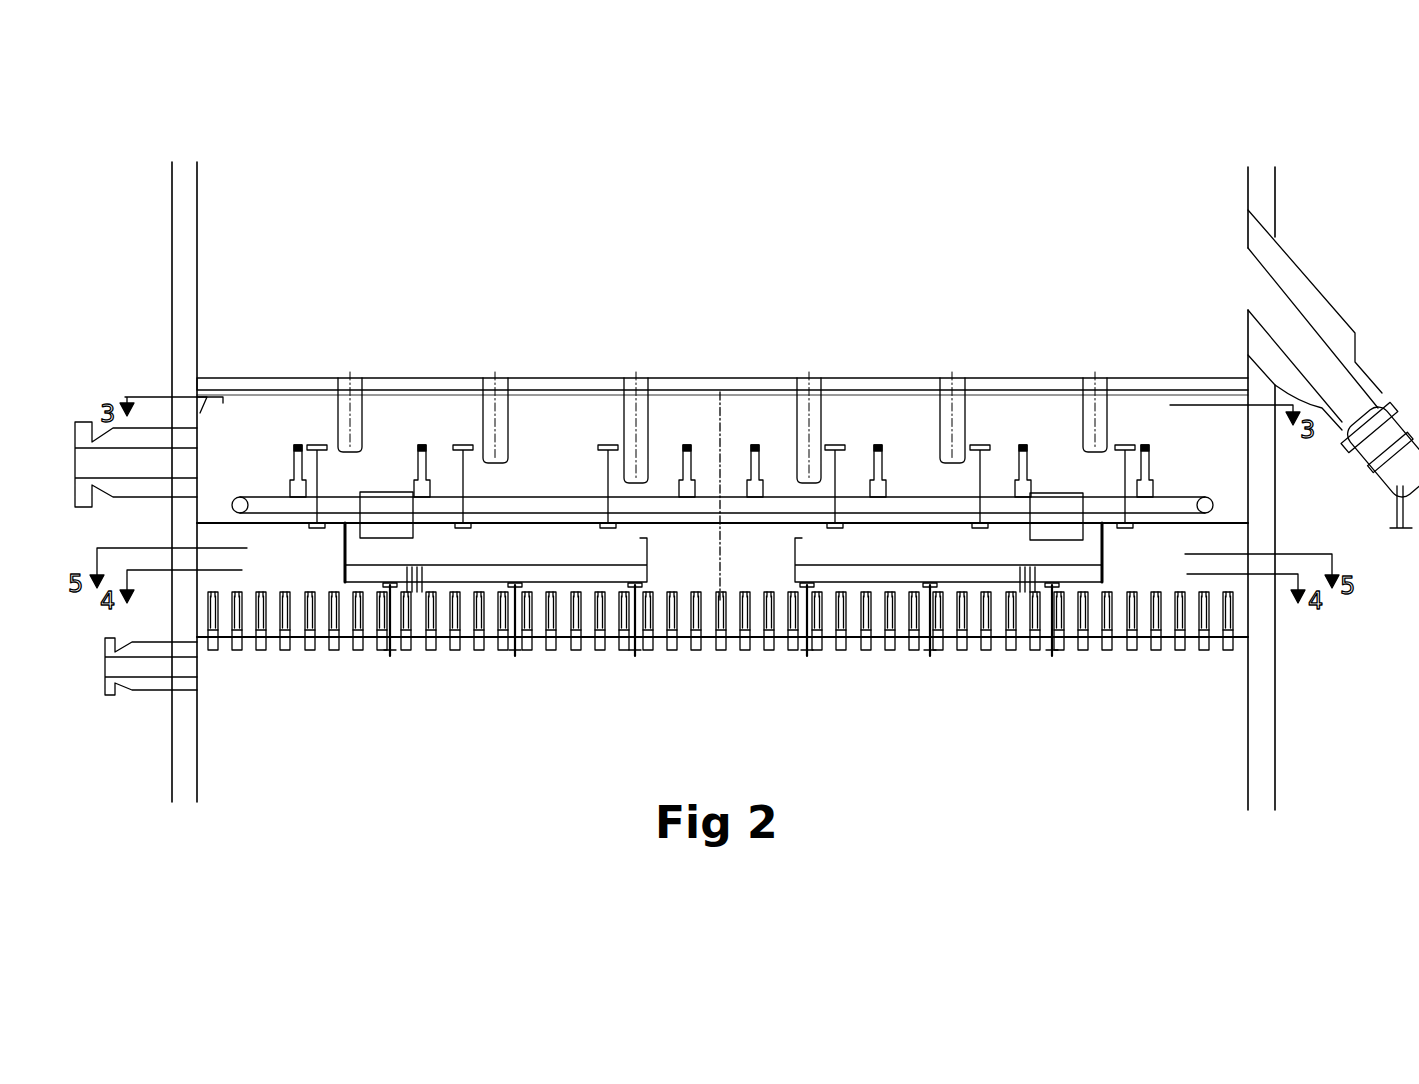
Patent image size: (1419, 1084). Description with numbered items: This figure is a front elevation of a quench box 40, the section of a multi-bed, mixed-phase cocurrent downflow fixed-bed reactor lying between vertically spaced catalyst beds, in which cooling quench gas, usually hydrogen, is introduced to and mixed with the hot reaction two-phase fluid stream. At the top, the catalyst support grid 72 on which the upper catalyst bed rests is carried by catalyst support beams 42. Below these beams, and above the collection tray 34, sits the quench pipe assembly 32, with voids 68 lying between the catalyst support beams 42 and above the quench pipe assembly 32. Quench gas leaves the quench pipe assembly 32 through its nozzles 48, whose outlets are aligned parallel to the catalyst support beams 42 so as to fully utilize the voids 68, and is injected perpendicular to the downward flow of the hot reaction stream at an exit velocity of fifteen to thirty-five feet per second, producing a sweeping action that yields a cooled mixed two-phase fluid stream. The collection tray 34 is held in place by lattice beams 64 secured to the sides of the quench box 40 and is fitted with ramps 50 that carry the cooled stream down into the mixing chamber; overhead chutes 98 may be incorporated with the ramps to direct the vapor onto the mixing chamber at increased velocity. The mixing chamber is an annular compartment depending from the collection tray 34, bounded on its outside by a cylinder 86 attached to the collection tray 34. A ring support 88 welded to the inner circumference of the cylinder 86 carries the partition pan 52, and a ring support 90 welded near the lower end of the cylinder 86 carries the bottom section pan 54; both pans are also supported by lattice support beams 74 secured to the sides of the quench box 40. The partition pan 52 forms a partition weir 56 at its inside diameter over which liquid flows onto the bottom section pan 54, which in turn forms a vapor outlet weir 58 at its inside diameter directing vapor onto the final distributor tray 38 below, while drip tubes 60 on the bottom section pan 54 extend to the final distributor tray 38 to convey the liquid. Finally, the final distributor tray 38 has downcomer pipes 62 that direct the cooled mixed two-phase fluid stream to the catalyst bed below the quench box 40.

The quench pipe assembly 32 is at (232, 505).
The collection tray 34 is at (1218, 523).
The final distributor tray 38 is at (1215, 633).
The quench box 40 is at (1272, 507).
The catalyst support beams 42 is at (625, 415).
The nozzles 48 is at (296, 482).
The ramps 50 is at (400, 536).
The partition pan 52 is at (535, 567).
The bottom section pan 54 is at (602, 580).
The partition weir 56 is at (815, 563).
The vapor outlet weir 58 is at (792, 548).
The drip tubes 60 is at (425, 590).
The downcomer pipes 62 is at (213, 652).
The lattice beams 64 is at (327, 484).
The voids 68 is at (262, 426).
The catalyst support grid 72 is at (232, 377).
The lattice support beams 74 is at (390, 613).
The cylinder 86 is at (345, 542).
The ring support 88 is at (345, 578).
The ring support 90 is at (345, 590).
The overhead chutes 98 is at (380, 505).